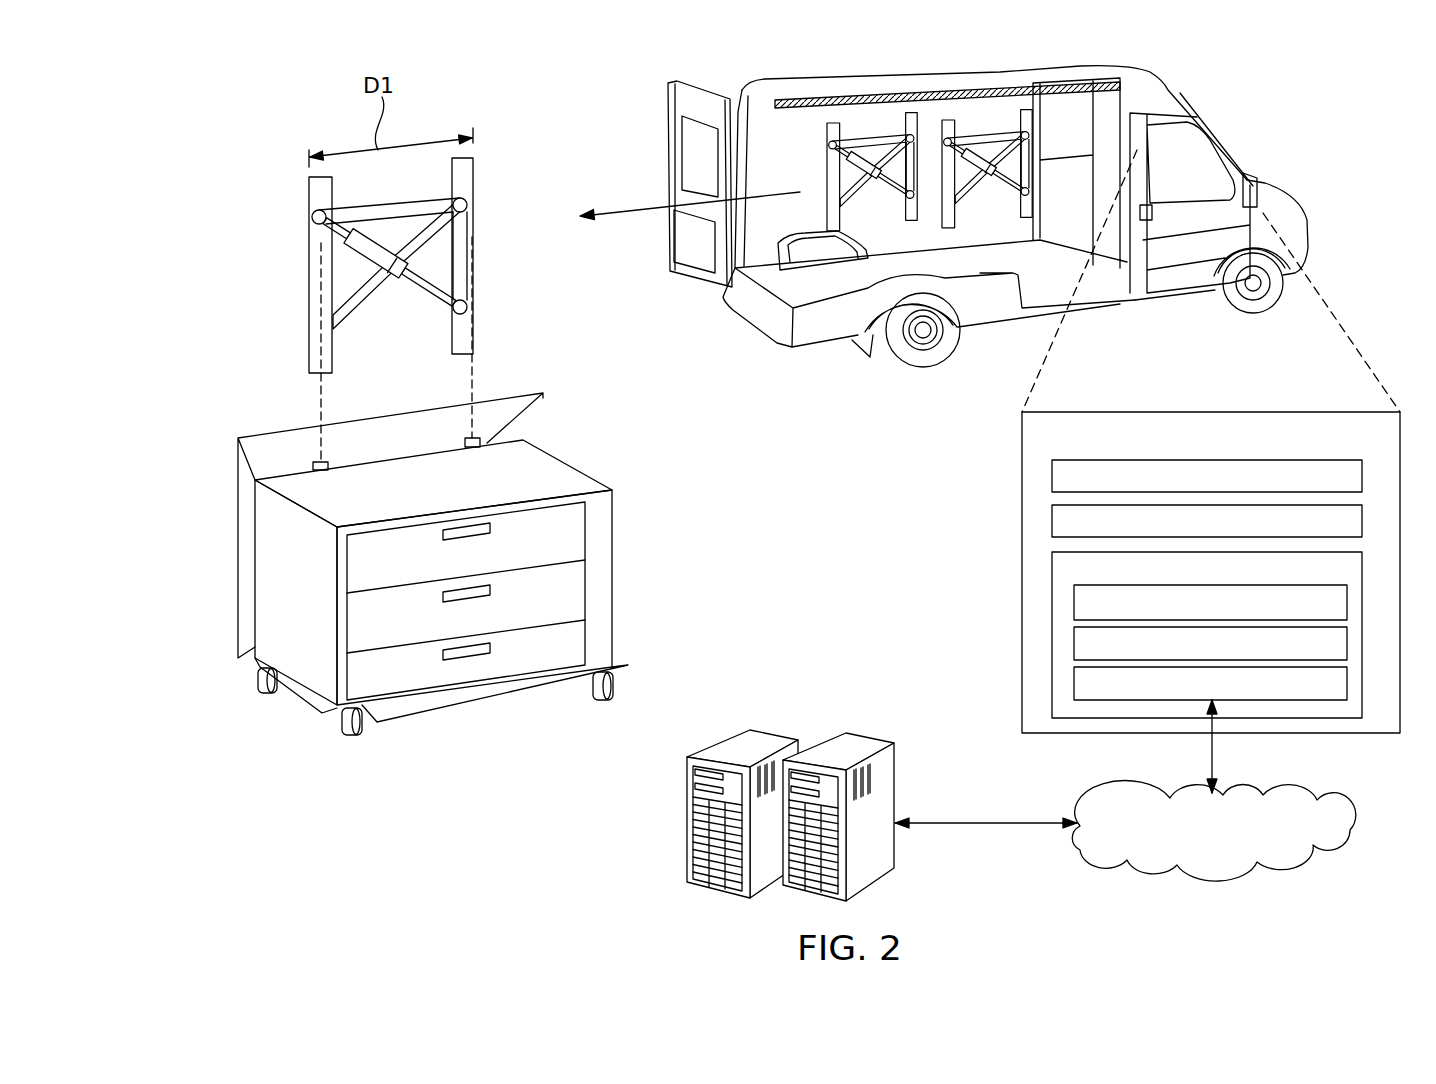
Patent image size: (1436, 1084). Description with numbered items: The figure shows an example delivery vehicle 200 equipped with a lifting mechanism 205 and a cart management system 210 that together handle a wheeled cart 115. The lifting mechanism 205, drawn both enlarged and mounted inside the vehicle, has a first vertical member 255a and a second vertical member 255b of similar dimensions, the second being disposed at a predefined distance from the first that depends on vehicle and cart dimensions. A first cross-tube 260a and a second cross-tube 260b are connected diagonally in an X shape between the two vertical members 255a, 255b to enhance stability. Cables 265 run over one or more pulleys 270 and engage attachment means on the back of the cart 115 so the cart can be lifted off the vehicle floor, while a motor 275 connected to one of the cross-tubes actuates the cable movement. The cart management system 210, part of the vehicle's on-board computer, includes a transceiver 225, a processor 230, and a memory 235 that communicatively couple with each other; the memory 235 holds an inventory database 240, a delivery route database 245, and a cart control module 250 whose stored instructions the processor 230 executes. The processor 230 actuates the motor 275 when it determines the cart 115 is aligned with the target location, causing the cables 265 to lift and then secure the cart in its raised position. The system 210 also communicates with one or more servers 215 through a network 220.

The cart 115 is at (280, 577).
The delivery vehicle 200 is at (1180, 92).
The lifting mechanism 205 is at (288, 186).
The cart management system 210 is at (1022, 436).
The server 215 is at (776, 730).
The network 220 is at (1353, 830).
The transceiver 225 is at (1052, 477).
The processor 230 is at (1052, 522).
The memory 235 is at (1052, 570).
The inventory database 240 is at (1074, 602).
The delivery route database 245 is at (1074, 642).
The cart control module 250 is at (1074, 682).
The first vertical member 255a is at (309, 297).
The second vertical member 255b is at (474, 175).
The first cross-tube 260a is at (436, 254).
The second cross-tube 260b is at (368, 303).
The cables 265 is at (345, 232).
The pulleys 270 is at (312, 217).
The motor 275 is at (383, 222).